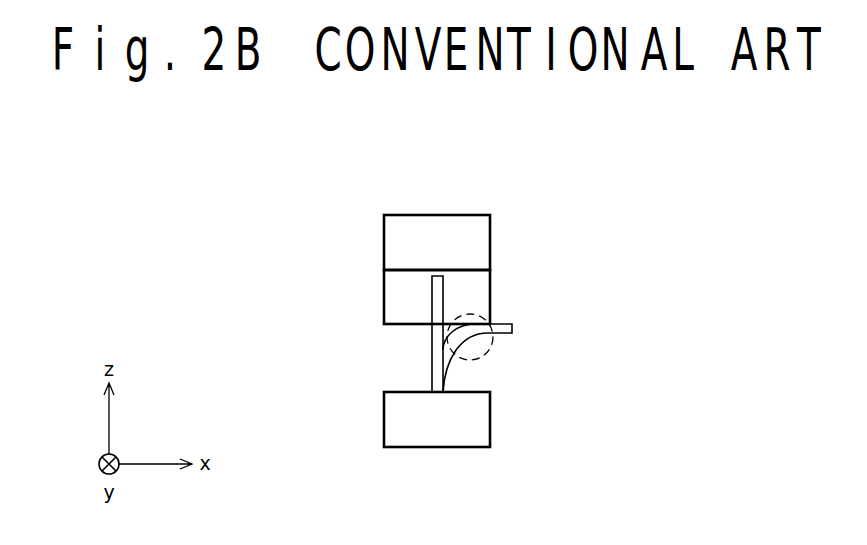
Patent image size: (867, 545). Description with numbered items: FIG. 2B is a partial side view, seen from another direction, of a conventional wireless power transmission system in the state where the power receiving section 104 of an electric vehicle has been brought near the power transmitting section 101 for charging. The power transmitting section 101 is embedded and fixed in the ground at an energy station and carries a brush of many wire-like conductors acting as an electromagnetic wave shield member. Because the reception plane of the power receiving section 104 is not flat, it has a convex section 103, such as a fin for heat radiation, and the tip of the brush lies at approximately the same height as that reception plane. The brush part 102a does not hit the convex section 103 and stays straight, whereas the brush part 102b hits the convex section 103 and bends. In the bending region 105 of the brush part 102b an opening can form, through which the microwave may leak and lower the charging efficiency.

The power receiving section 104 is at (485, 242).
The convex section 103 is at (485, 293).
The brush part 102a is at (430, 317).
The brush part 102b is at (512, 333).
The bending region 105 is at (482, 357).
The power transmitting section 101 is at (487, 422).